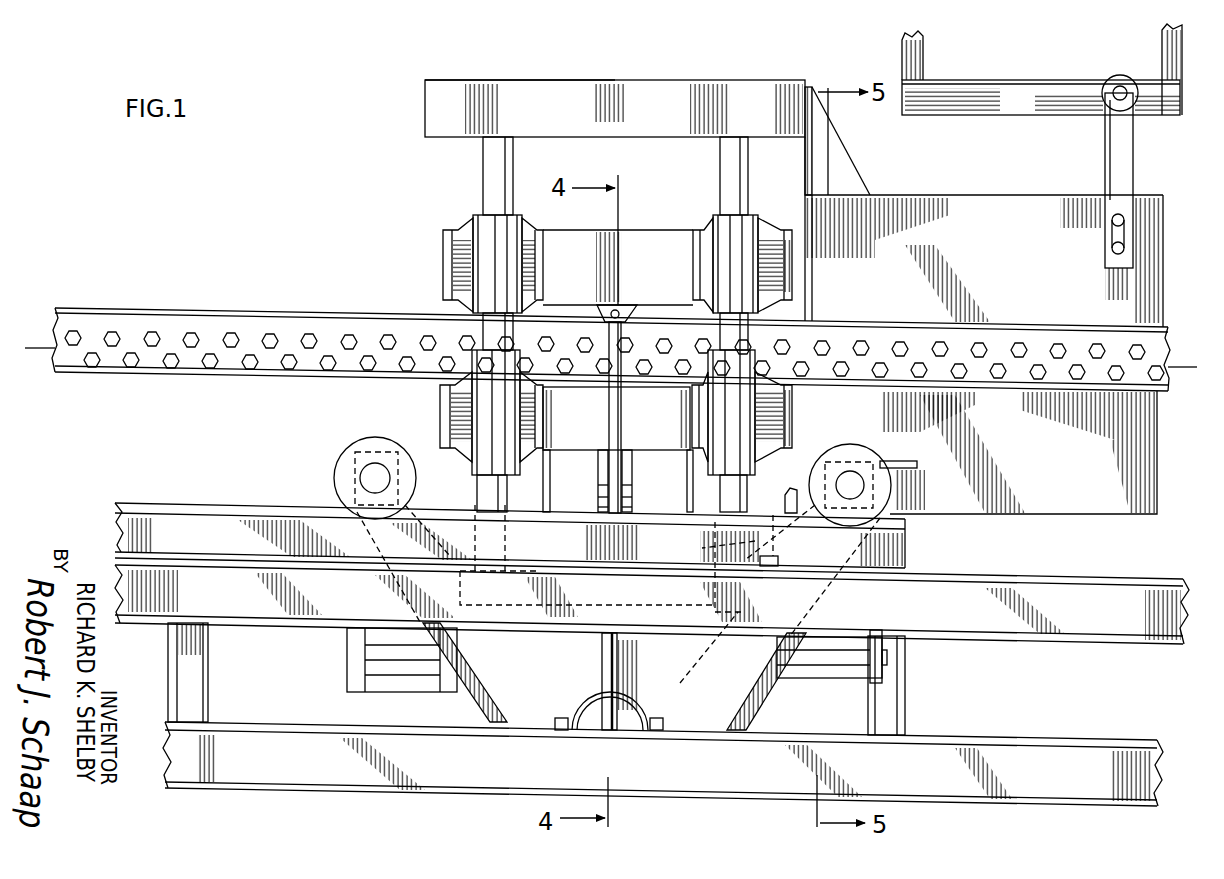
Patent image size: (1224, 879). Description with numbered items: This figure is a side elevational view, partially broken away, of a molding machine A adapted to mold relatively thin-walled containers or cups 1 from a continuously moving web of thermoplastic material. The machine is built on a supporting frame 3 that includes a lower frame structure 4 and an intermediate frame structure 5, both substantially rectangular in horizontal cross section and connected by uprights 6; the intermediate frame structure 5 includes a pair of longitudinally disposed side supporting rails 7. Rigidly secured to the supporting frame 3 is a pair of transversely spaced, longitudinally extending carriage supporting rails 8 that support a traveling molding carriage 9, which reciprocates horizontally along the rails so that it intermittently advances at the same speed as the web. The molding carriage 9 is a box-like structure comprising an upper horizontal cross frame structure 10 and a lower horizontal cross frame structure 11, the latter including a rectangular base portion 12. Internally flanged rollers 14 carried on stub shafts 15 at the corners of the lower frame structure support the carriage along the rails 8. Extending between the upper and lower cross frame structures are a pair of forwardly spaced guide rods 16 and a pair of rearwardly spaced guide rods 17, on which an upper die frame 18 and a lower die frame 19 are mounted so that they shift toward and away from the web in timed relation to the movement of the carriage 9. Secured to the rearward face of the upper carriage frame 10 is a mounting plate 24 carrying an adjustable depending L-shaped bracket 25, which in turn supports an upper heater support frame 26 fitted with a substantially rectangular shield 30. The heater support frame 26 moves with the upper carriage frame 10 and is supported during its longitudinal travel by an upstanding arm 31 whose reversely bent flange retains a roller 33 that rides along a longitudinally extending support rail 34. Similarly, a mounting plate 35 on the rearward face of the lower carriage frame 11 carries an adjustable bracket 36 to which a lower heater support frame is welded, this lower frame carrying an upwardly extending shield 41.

The cups 1 is at (1188, 368).
The supporting frame 3 is at (262, 790).
The lower frame structure 4 is at (963, 641).
The intermediate frame structure 5 is at (1043, 738).
The uprights 6 is at (904, 716).
The side supporting rails 7 is at (905, 564).
The carriage supporting rails 8 is at (228, 505).
The traveling molding carriage 9 is at (535, 80).
The upper horizontal cross frame structure 10 is at (698, 80).
The lower horizontal cross frame structure 11 is at (696, 656).
The rectangular base portion 12 is at (754, 704).
The internally flanged rollers 14 is at (358, 454).
The stub shafts 15 is at (381, 475).
The forwardly spaced guide rods 16 is at (492, 172).
The rearwardly spaced guide rods 17 is at (722, 172).
The upper die frame 18 is at (443, 246).
The lower die frame 19 is at (440, 407).
The mounting plate 24 is at (808, 87).
The L-shaped bracket 25 is at (856, 167).
The upper heater support frame 26 is at (915, 195).
The shield 30 is at (1165, 266).
The upstanding arm 31 is at (1107, 146).
The roller 33 is at (1111, 82).
The support rail 34 is at (1006, 93).
The mounting plate 35 is at (770, 580).
The bracket 36 is at (727, 552).
The shield 41 is at (1158, 456).
The molding machine A is at (335, 282).